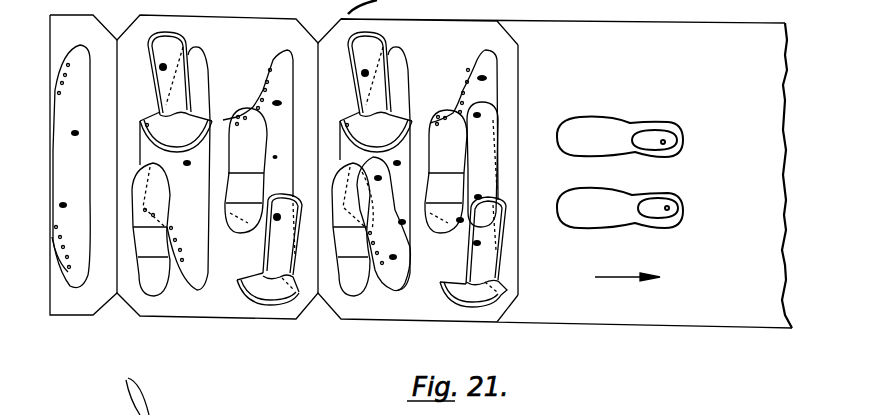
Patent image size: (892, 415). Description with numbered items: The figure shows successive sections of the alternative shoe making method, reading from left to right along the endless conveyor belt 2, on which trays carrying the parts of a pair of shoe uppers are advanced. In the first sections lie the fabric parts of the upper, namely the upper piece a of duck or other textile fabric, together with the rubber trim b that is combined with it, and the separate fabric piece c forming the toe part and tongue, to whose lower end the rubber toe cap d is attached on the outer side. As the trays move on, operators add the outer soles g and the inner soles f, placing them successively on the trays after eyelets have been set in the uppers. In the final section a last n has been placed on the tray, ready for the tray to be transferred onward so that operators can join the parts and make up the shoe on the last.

The endless conveyor belt 2 is at (650, 33).
The upper fabric piece a is at (76, 112).
The rubber trim b is at (95, 170).
The toe part and tongue piece c is at (170, 52).
The toe cap d is at (323, 209).
The outer sole g is at (157, 273).
The inner sole f is at (427, 196).
The last n is at (598, 146).